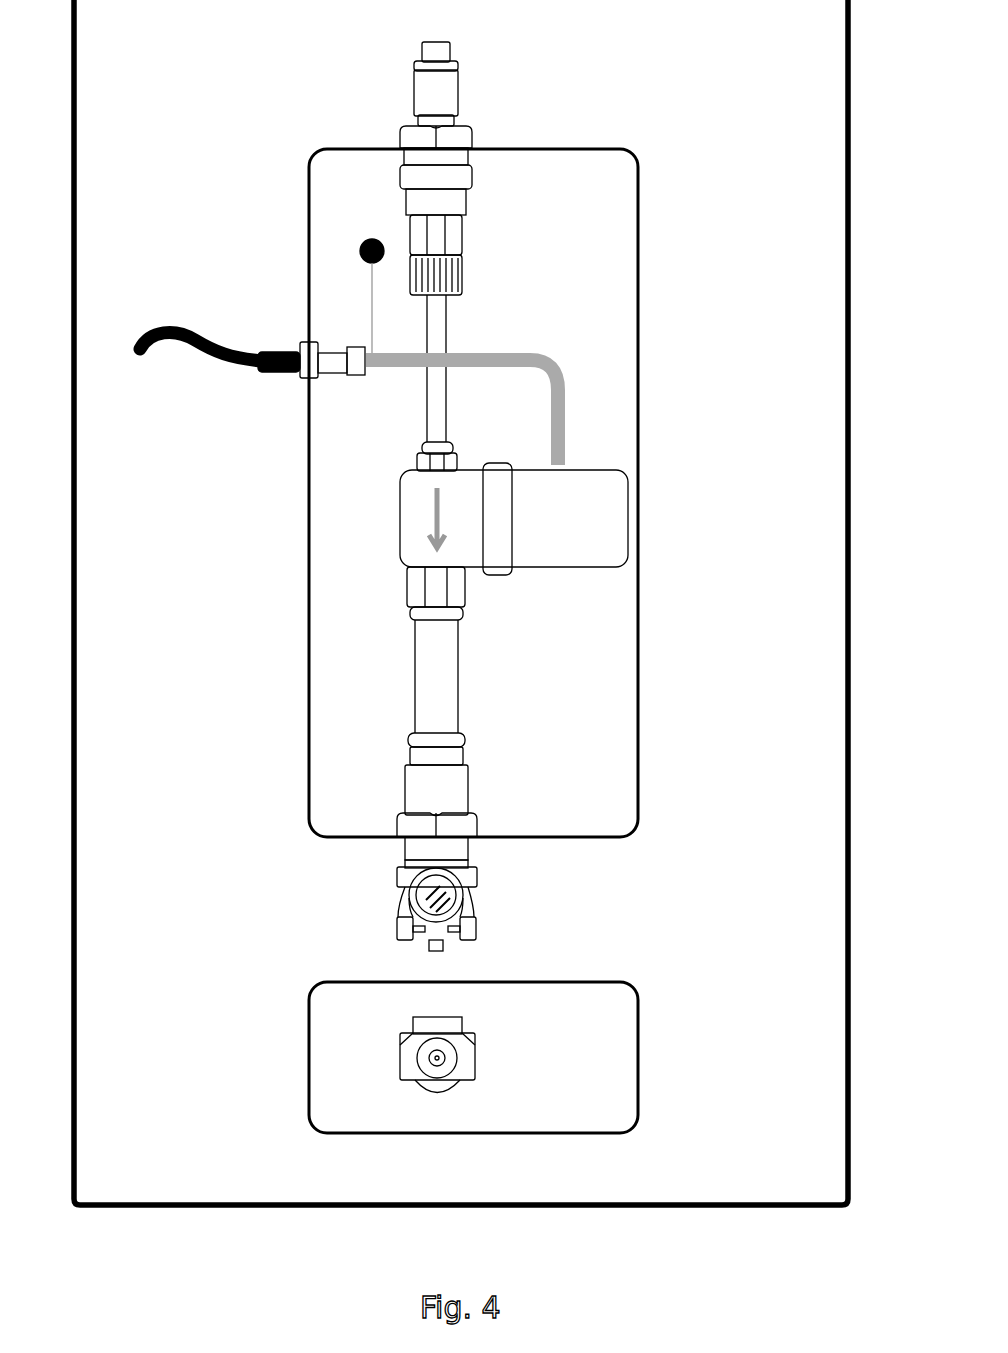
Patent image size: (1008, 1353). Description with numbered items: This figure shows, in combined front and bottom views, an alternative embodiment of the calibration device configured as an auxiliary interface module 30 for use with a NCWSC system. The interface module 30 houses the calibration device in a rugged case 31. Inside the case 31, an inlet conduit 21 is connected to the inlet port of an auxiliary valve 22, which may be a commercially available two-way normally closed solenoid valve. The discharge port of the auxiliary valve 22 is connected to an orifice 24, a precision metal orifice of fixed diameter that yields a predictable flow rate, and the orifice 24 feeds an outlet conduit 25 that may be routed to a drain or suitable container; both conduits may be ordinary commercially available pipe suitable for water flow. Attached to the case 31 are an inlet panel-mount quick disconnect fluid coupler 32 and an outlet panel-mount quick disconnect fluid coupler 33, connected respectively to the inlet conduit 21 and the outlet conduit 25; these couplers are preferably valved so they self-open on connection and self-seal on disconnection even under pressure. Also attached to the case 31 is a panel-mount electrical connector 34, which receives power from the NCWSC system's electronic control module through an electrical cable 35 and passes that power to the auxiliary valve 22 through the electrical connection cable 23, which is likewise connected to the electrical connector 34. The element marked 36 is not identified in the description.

The auxiliary interface module 30 is at (663, 1206).
The rugged case 31 is at (578, 977).
The inlet panel-mount quick disconnect fluid coupler 32 is at (397, 96).
The inlet conduit 21 is at (457, 407).
The auxiliary valve 22 is at (393, 522).
The electrical connection cable 23 is at (500, 343).
The orifice 24 is at (475, 595).
The outlet conduit 25 is at (475, 682).
The outlet panel-mount quick disconnect fluid coupler 33 is at (397, 1015).
The panel-mount electrical connector 34 is at (293, 338).
The electrical cable 35 is at (168, 325).
The indicator 36 is at (360, 246).